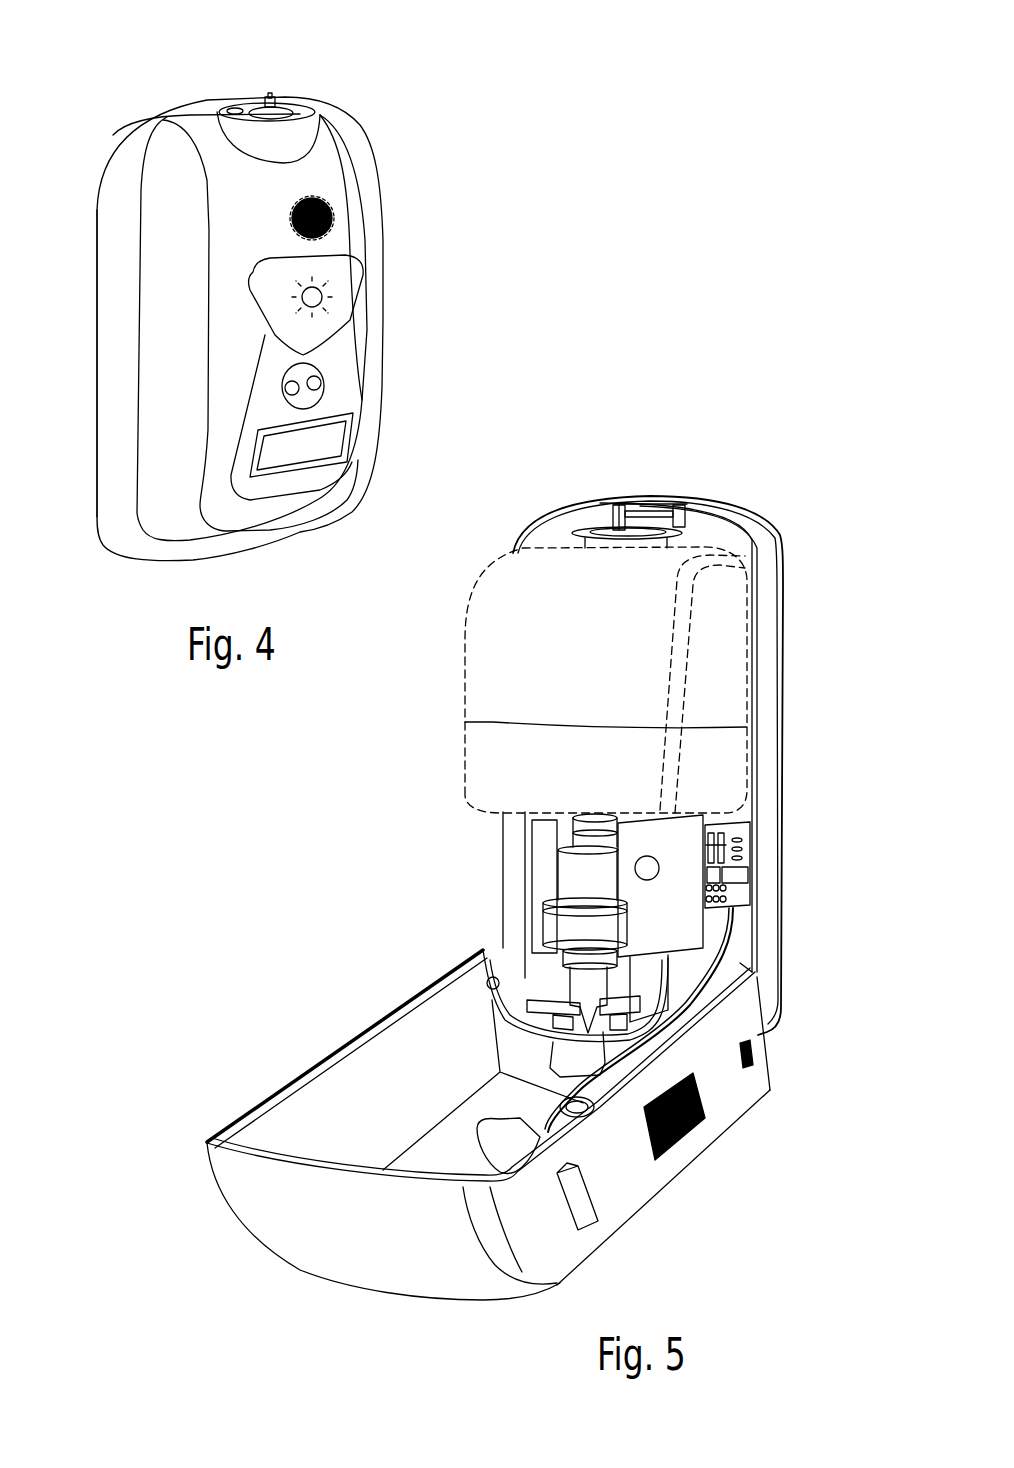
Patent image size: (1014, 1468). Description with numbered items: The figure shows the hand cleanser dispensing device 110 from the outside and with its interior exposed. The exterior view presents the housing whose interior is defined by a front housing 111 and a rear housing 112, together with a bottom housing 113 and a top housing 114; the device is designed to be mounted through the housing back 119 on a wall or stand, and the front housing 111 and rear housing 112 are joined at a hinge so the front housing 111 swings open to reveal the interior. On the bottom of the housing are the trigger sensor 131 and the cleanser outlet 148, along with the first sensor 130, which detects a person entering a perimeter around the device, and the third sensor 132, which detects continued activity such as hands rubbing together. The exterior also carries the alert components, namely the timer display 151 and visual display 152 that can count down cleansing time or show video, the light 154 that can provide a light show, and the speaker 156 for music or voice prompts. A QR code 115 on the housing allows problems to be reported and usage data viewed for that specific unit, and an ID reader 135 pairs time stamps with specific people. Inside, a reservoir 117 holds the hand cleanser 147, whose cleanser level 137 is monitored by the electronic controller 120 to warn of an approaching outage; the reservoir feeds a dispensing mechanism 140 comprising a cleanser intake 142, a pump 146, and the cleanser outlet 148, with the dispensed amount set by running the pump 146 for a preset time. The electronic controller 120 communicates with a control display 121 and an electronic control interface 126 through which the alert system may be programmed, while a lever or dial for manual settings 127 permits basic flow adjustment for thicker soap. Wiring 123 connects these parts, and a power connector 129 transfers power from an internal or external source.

In FIG. 4, the dispensing device 110 is at (147, 54).
In FIG. 5, the dispensing device 110 is at (743, 466).
In FIG. 4, the front housing 111 is at (363, 170).
In FIG. 5, the front housing 111 is at (278, 1107).
In FIG. 4, the rear housing 112 is at (127, 173).
In FIG. 5, the rear housing 112 is at (773, 719).
In FIG. 4, the bottom housing 113 is at (300, 110).
In FIG. 5, the top housing 114 is at (257, 1173).
In FIG. 5, the QR code 115 is at (683, 1137).
In FIG. 5, the reservoir 117 is at (717, 670).
In FIG. 4, the housing back 119 is at (97, 413).
In FIG. 5, the electronic controller 120 is at (740, 843).
In FIG. 5, the control display 121 is at (720, 873).
In FIG. 5, the wiring 123 is at (737, 925).
In FIG. 5, the electronic control interface 126 is at (723, 893).
In FIG. 5, the manual settings interface 127 is at (670, 880).
In FIG. 5, the power connector 129 is at (660, 997).
In FIG. 4, the first sensor 130 is at (315, 384).
In FIG. 4, the trigger sensor 131 is at (233, 108).
In FIG. 4, the third sensor 132 is at (297, 383).
In FIG. 5, the ID reader 135 is at (593, 1213).
In FIG. 5, the cleanser level 137 is at (548, 751).
In FIG. 5, the dispensing mechanism 140 is at (560, 883).
In FIG. 5, the cleanser intake 142 is at (587, 823).
In FIG. 5, the pump 146 is at (557, 927).
In FIG. 5, the hand cleanser 147 is at (493, 722).
In FIG. 4, the cleanser outlet 148 is at (278, 103).
In FIG. 5, the cleanser outlet 148 is at (583, 990).
In FIG. 4, the timer display 151 is at (370, 432).
In FIG. 4, the visual display 152 is at (350, 437).
In FIG. 4, the light 154 is at (325, 293).
In FIG. 5, the light 154 is at (520, 1125).
In FIG. 4, the speaker 156 is at (333, 220).
In FIG. 5, the speaker 156 is at (500, 1072).